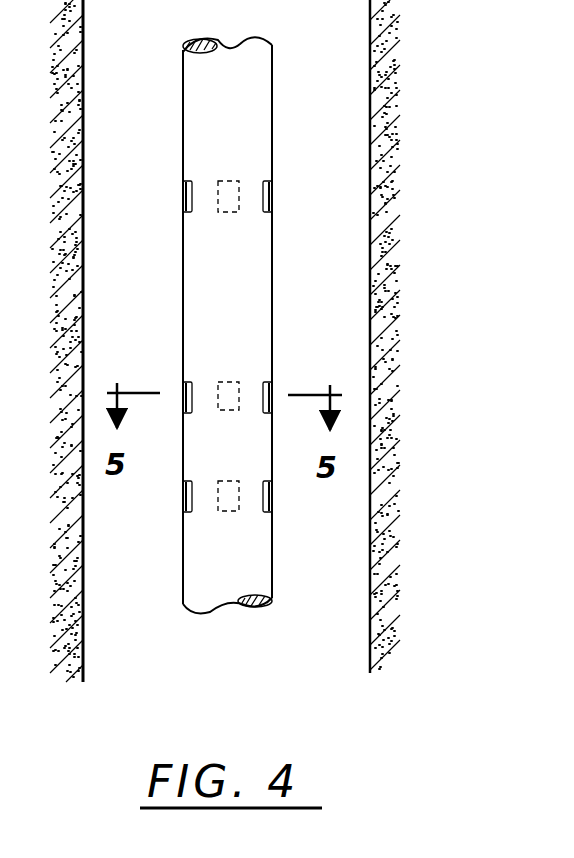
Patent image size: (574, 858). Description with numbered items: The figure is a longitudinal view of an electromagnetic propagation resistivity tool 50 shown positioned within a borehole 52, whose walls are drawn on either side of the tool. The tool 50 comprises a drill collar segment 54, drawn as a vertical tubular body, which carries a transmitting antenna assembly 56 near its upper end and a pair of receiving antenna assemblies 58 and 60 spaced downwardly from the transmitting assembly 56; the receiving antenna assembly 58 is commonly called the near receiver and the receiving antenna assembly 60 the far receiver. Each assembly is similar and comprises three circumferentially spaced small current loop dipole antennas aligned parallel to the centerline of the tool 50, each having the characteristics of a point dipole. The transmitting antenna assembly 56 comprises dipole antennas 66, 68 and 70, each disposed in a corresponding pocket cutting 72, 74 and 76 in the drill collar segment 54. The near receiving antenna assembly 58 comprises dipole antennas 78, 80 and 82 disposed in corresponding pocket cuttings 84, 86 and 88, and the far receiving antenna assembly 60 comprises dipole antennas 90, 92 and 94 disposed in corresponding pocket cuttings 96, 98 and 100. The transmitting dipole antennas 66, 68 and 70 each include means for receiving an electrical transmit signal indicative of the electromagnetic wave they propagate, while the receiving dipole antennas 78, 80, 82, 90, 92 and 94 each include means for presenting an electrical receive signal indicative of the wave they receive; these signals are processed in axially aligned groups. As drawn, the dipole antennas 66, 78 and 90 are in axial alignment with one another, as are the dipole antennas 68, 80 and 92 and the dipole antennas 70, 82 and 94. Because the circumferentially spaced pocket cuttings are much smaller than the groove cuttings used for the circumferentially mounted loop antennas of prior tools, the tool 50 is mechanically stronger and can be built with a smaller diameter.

The electromagnetic propagation resistivity tool 50 is at (308, 159).
The borehole 52 is at (354, 327).
The drill collar segment 54 is at (266, 83).
The transmitting antenna assembly 56 is at (233, 193).
The receiving antenna assembly 58 is at (243, 380).
The receiving antenna assembly 60 is at (232, 541).
The dipole antenna 66 is at (235, 181).
The dipole antenna 68 is at (184, 186).
The dipole antenna 70 is at (273, 193).
The pocket cutting 72 is at (232, 212).
The pocket cutting 74 is at (184, 222).
The pocket cutting 76 is at (268, 215).
The dipole antenna 78 is at (233, 380).
The dipole antenna 80 is at (183, 398).
The dipole antenna 82 is at (268, 410).
The pocket cutting 84 is at (220, 386).
The pocket cutting 86 is at (184, 424).
The pocket cutting 88 is at (266, 382).
The dipole antenna 90 is at (227, 482).
The dipole antenna 92 is at (183, 492).
The dipole antenna 94 is at (273, 491).
The pocket cutting 96 is at (228, 513).
The pocket cutting 98 is at (188, 512).
The pocket cutting 100 is at (266, 513).